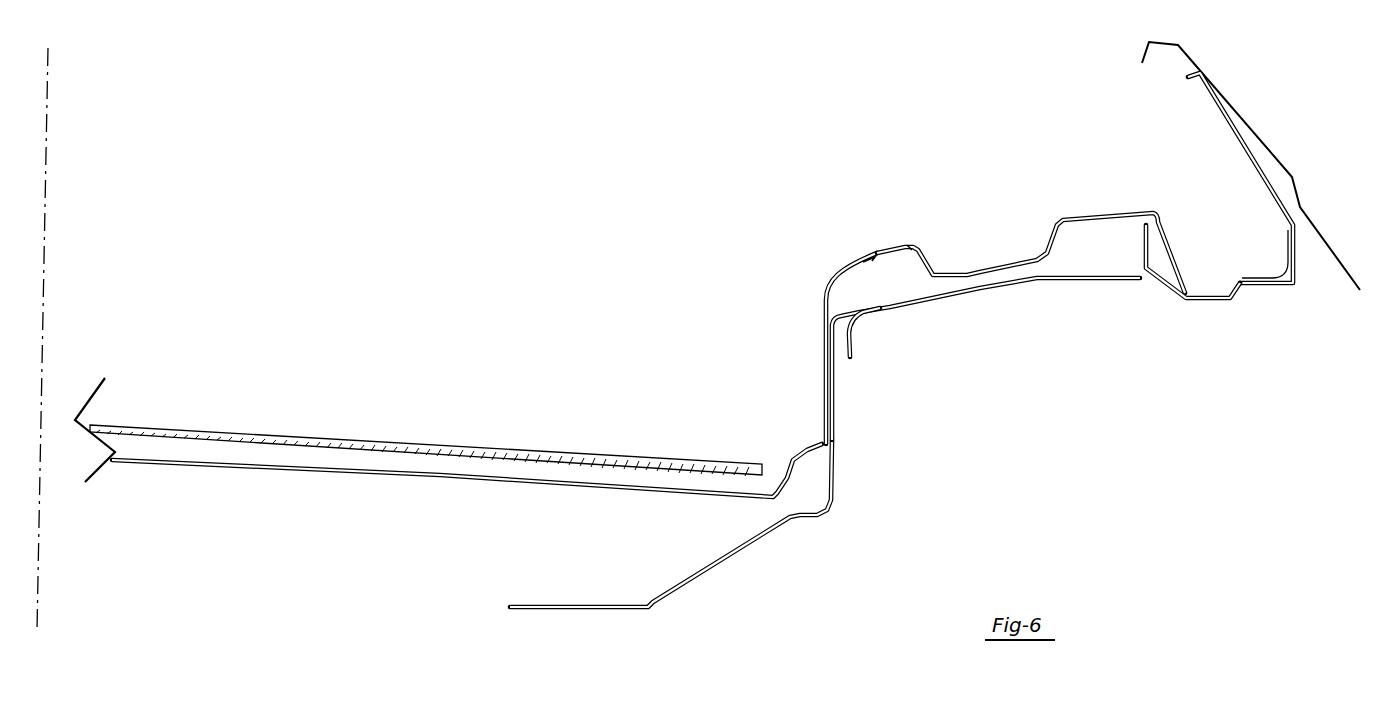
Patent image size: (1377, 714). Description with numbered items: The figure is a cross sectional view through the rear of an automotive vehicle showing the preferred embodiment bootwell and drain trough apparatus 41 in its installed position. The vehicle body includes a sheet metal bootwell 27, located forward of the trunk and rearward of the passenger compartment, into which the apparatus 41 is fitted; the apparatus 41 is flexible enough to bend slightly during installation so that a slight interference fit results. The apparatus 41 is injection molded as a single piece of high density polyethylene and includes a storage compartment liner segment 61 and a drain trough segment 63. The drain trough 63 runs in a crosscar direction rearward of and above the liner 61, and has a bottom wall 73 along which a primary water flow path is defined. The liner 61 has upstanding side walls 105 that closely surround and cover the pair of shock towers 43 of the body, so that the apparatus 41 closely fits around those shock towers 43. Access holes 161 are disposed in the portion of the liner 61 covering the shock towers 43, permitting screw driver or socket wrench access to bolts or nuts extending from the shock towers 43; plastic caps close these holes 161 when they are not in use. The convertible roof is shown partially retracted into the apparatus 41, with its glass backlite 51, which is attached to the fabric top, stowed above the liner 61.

The bootwell and drain trough apparatus 41 is at (386, 190).
The backlite 51 is at (327, 437).
The storage compartment liner segment 61 is at (263, 472).
The upstanding side walls 105 is at (825, 305).
The access holes 161 is at (892, 252).
The bootwell 27 is at (703, 580).
The shock towers 43 is at (985, 293).
The drain trough segment 63 is at (1240, 133).
The bottom wall 73 is at (1207, 297).